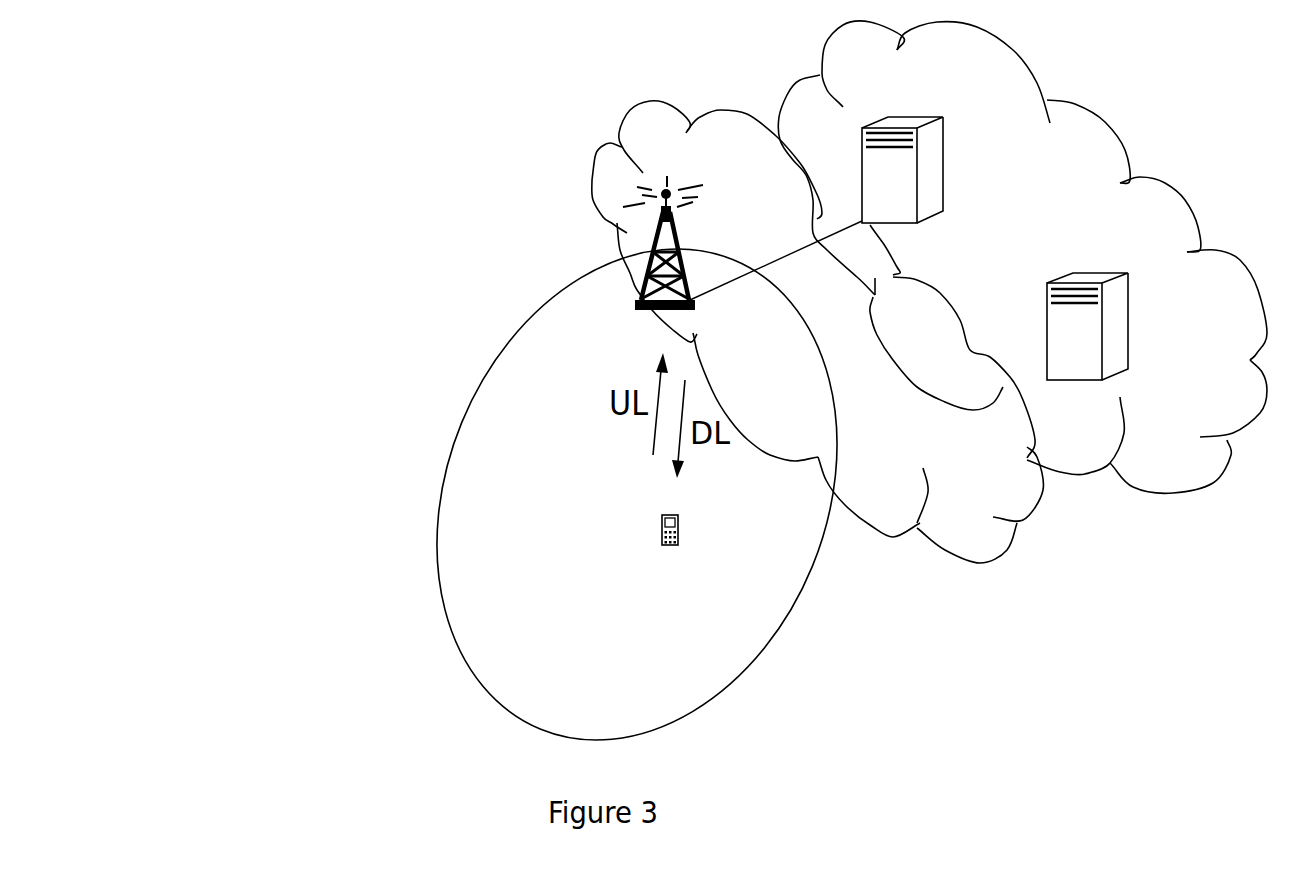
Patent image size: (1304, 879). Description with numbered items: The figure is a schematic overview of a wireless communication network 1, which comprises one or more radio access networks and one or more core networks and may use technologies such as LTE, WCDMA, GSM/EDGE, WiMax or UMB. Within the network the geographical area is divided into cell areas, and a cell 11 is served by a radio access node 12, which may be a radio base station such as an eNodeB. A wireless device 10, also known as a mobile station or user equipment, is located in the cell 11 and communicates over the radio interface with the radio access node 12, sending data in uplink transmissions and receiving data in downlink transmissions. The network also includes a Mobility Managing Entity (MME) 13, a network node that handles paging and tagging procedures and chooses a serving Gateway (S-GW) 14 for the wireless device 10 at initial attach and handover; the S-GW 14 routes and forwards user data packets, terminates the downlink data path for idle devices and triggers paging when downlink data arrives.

The wireless communication network 1 is at (294, 154).
The wireless device 10 is at (662, 538).
The cell 11 is at (555, 453).
The radio access node 12 is at (680, 252).
The Mobility Managing Entity (MME) 13 is at (933, 195).
The serving Gateway (S-GW) 14 is at (1118, 360).